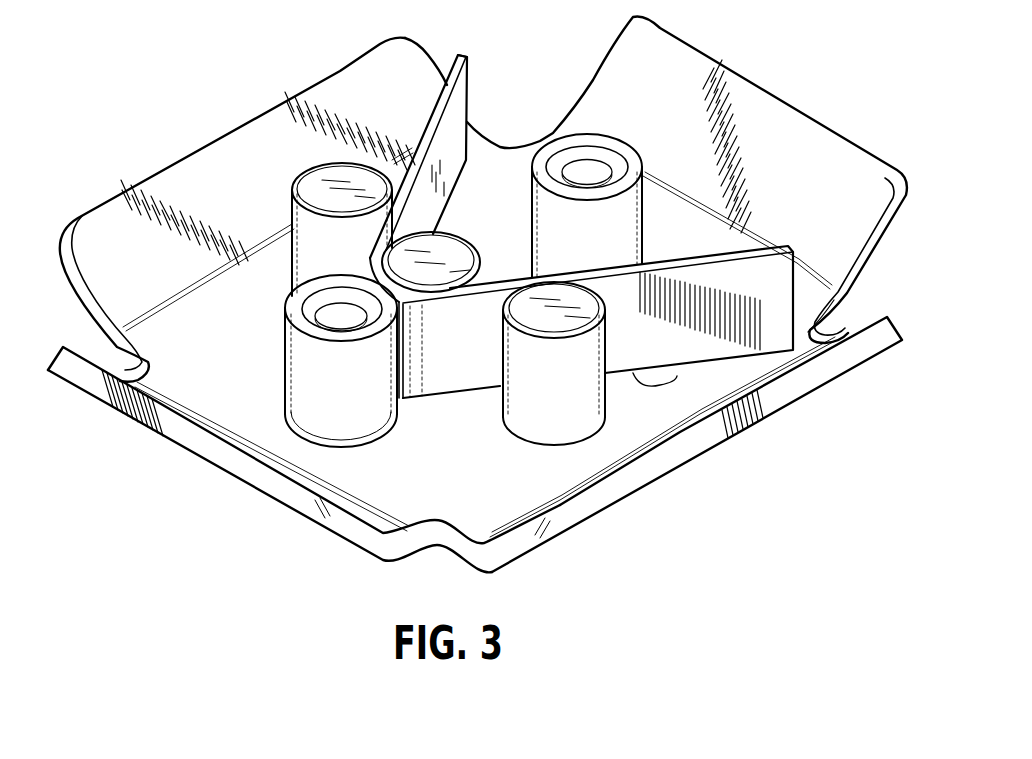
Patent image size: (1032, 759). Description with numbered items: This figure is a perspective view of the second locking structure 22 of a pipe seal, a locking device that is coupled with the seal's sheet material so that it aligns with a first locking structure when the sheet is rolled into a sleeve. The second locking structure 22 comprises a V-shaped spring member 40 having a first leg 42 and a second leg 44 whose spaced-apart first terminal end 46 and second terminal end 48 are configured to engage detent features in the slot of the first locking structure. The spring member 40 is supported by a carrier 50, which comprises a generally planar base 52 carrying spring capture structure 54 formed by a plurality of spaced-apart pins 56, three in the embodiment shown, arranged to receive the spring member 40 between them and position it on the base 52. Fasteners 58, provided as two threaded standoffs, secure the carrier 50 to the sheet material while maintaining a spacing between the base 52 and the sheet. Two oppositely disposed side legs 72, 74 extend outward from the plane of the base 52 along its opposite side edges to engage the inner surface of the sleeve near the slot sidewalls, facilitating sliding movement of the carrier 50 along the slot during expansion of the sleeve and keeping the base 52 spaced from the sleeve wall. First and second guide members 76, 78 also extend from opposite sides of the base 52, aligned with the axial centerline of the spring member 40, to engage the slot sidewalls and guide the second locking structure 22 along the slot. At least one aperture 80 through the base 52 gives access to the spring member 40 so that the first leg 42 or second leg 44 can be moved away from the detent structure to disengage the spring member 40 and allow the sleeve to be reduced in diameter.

The second locking structure 22 is at (248, 55).
The V-shaped spring member 40 is at (747, 365).
The first leg 42 is at (436, 108).
The second leg 44 is at (780, 260).
The first terminal end 46 is at (467, 78).
The second terminal end 48 is at (800, 303).
The carrier 50 is at (75, 329).
The base 52 is at (434, 467).
The spring capture structure 54 is at (262, 316).
The pins 56 is at (328, 165).
The fastener 58 is at (603, 138).
The side leg 72 is at (198, 152).
The side leg 74 is at (872, 340).
The first guide member 76 is at (90, 382).
The second guide member 78 is at (797, 108).
The aperture 80 is at (678, 377).